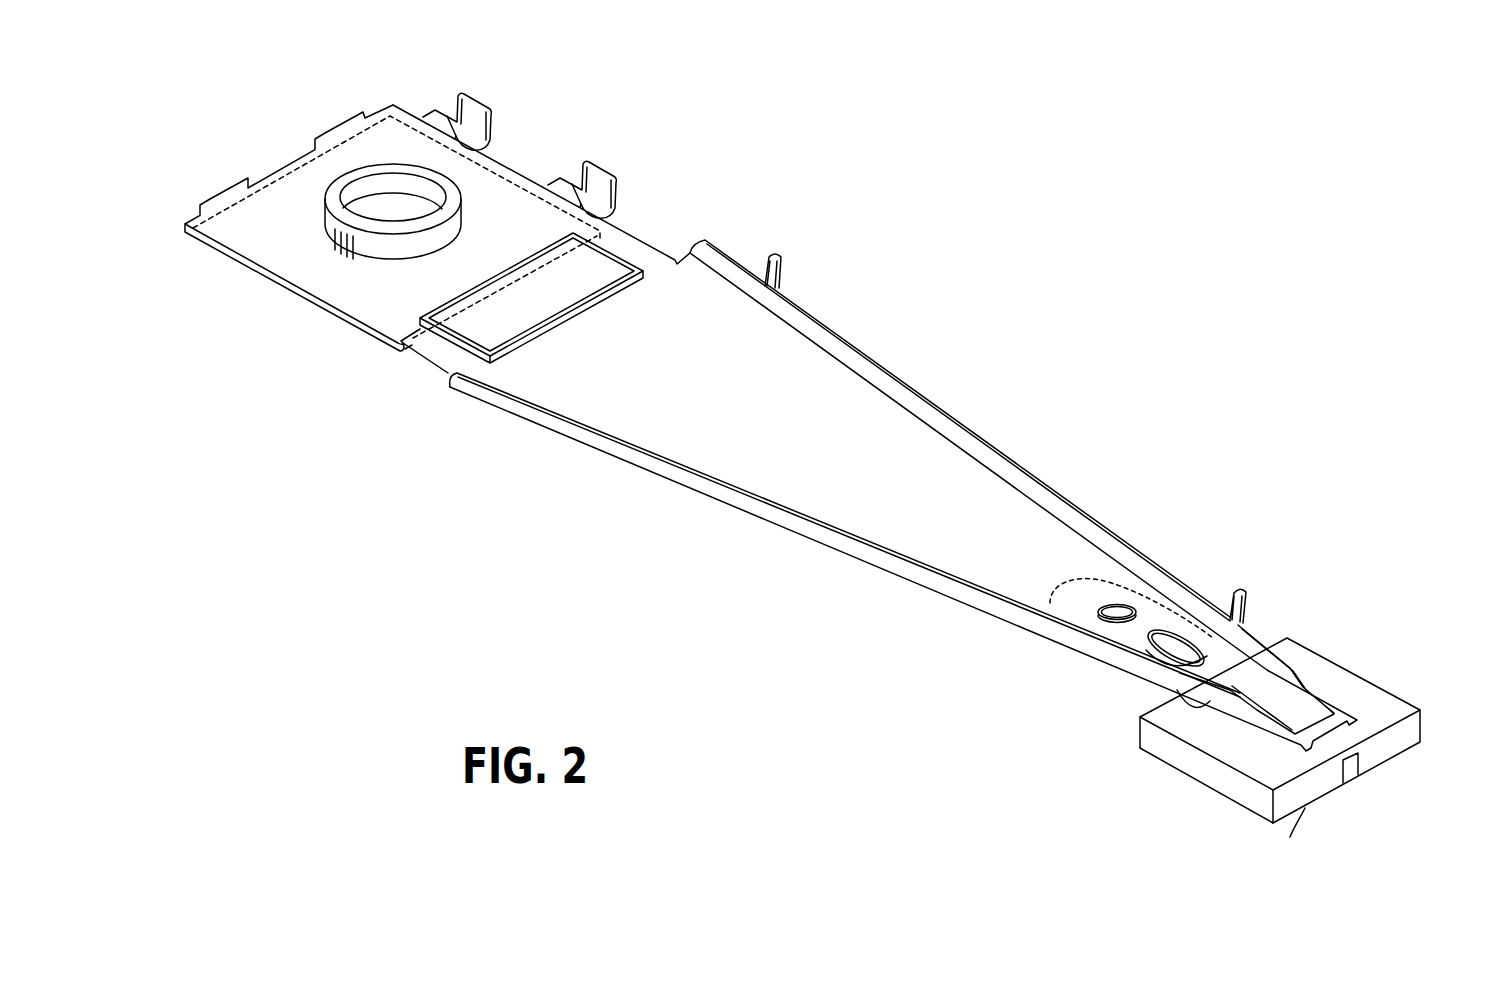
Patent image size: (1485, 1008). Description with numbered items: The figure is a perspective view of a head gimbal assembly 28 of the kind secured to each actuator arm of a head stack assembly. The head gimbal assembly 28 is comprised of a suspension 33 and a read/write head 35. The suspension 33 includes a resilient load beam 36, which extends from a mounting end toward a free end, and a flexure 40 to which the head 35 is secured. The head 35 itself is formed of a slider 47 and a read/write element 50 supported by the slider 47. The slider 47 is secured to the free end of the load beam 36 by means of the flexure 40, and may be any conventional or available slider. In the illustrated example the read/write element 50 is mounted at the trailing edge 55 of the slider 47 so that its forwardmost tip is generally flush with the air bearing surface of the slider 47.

The head gimbal assembly 28 is at (930, 232).
The load beam 36 is at (908, 455).
The suspension 33 is at (1119, 512).
The read/write head 35 is at (1310, 625).
The flexure 40 is at (1175, 698).
The slider 47 is at (1347, 670).
The trailing edge 55 is at (1422, 742).
The read/write element 50 is at (1352, 777).